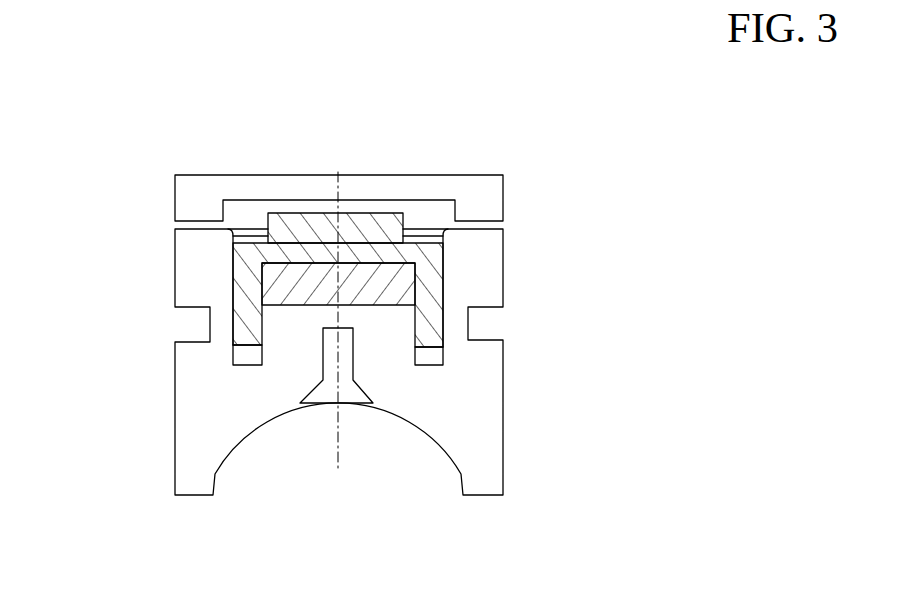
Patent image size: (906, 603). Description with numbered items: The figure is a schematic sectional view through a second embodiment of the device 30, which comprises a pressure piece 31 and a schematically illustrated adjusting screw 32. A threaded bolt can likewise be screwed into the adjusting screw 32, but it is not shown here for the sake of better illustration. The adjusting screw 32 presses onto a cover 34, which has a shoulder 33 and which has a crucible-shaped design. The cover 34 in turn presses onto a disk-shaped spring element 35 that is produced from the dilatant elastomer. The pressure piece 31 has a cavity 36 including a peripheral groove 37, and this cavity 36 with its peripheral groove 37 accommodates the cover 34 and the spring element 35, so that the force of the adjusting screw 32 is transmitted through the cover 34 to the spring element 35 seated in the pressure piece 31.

The device 30 is at (625, 228).
The pressure piece 31 is at (391, 362).
The adjusting screw 32 is at (386, 142).
The shoulder 33 is at (339, 173).
The cover 34 is at (242, 295).
The spring element 35 is at (244, 400).
The cavity 36 is at (323, 427).
The peripheral groove 37 is at (247, 414).